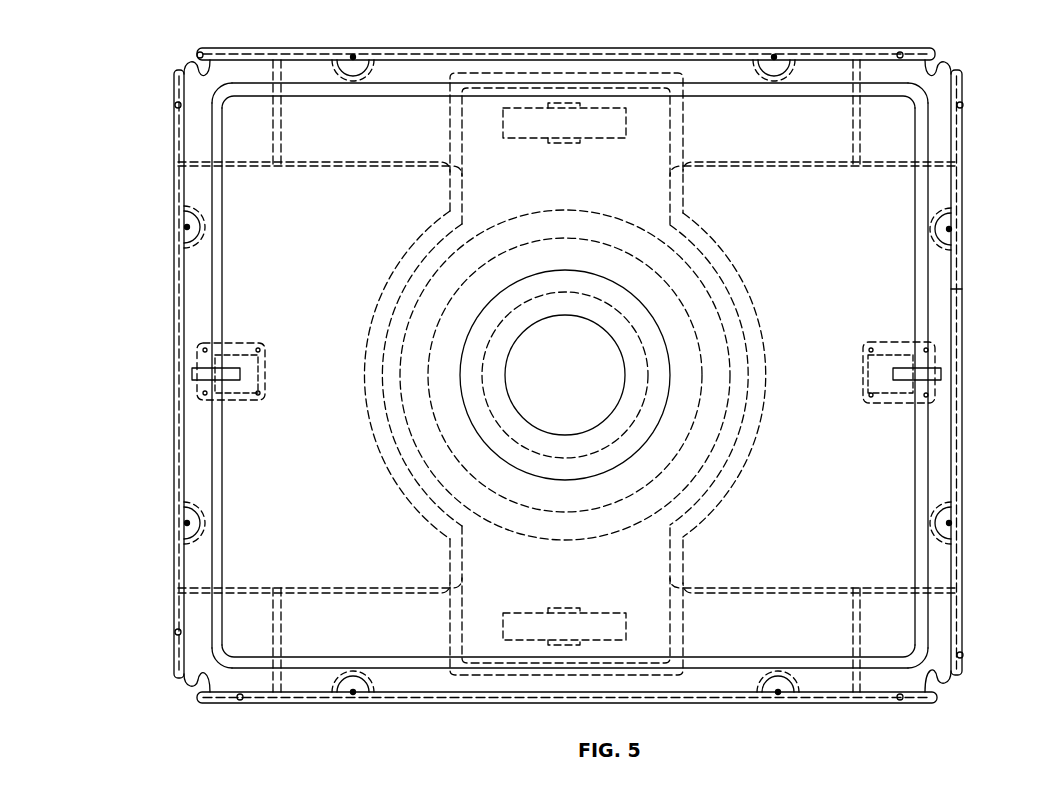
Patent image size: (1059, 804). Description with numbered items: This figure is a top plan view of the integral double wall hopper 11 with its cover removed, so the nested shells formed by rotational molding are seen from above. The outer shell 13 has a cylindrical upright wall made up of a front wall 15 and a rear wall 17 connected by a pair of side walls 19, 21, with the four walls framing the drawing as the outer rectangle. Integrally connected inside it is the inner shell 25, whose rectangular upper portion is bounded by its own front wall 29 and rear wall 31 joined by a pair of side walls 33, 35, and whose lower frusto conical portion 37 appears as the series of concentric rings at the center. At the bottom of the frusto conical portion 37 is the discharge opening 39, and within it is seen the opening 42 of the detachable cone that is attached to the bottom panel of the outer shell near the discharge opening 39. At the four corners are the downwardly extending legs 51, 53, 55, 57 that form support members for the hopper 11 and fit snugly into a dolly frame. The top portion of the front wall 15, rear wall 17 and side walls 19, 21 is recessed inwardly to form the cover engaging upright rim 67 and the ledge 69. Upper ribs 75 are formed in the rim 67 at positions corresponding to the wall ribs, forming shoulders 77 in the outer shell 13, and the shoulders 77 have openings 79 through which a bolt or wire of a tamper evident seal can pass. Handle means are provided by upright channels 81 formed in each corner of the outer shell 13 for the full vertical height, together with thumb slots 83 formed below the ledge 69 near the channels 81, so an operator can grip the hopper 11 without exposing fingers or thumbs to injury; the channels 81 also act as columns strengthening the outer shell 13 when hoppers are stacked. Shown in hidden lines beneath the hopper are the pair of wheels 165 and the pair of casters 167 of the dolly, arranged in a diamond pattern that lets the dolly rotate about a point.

The double wall hopper 11 is at (122, 339).
The outer shell 13 is at (174, 362).
The front wall 15 is at (174, 398).
The rear wall 17 is at (960, 388).
The side wall 19 is at (541, 704).
The side wall 21 is at (541, 48).
The inner shell 25 is at (722, 97).
The front wall 29 is at (224, 442).
The rear wall 31 is at (914, 440).
The side wall 33 is at (380, 657).
The side wall 35 is at (345, 97).
The frusto conical portion 37 is at (808, 259).
The discharge opening 39 is at (463, 378).
The opening 42 is at (570, 366).
The leg 51 is at (210, 97).
The leg 53 is at (190, 660).
The leg 55 is at (955, 626).
The leg 57 is at (962, 84).
The cover engaging upright rim 67 is at (962, 289).
The ledge 69 is at (955, 320).
The upper ribs 75 is at (372, 63).
The shoulders 77 is at (345, 60).
The openings 79 is at (355, 54).
The upright channels 81 is at (188, 68).
The thumb slots 83 is at (222, 58).
The wheels 165 is at (620, 140).
The casters 167 is at (250, 396).